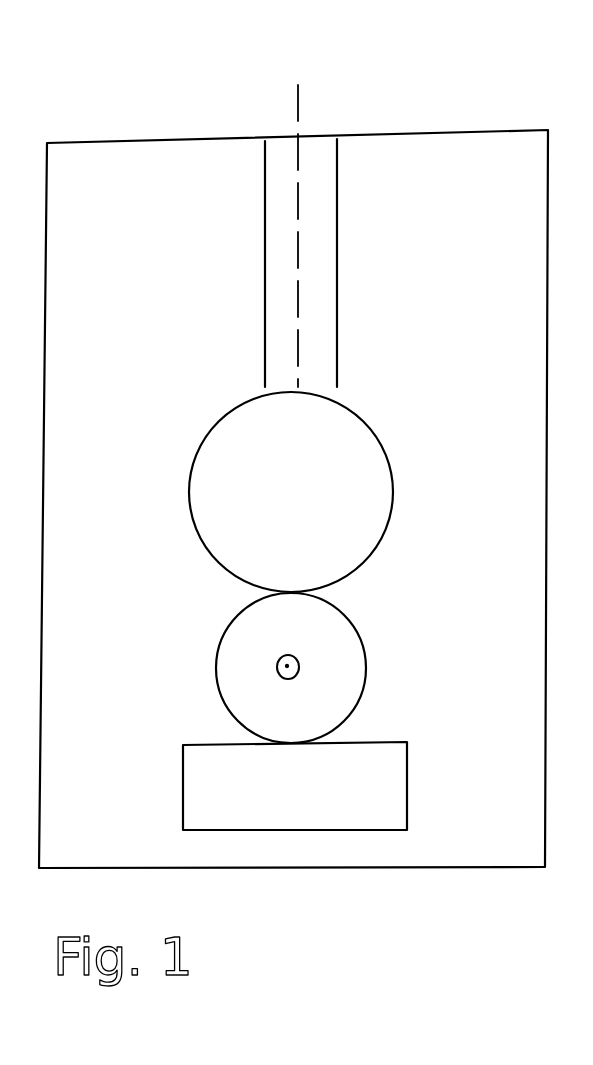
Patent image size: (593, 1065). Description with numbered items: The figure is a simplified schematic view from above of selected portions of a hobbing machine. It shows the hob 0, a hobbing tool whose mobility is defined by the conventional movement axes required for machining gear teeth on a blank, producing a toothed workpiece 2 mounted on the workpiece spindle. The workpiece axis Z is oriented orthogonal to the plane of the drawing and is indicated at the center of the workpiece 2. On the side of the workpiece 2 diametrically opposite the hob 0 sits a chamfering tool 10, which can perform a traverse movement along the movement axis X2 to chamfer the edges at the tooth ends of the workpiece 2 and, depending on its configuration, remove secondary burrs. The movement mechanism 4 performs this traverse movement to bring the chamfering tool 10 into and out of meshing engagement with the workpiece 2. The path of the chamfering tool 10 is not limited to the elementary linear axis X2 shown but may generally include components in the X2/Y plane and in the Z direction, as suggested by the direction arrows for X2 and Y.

The movement mechanism 4 is at (278, 188).
The chamfering tool 10 is at (367, 483).
The workpiece 2 is at (352, 667).
The workpiece axis Z is at (277, 675).
The hob 0 is at (388, 792).
The movement axis X2 is at (325, 100).
The Y direction Y is at (527, 290).